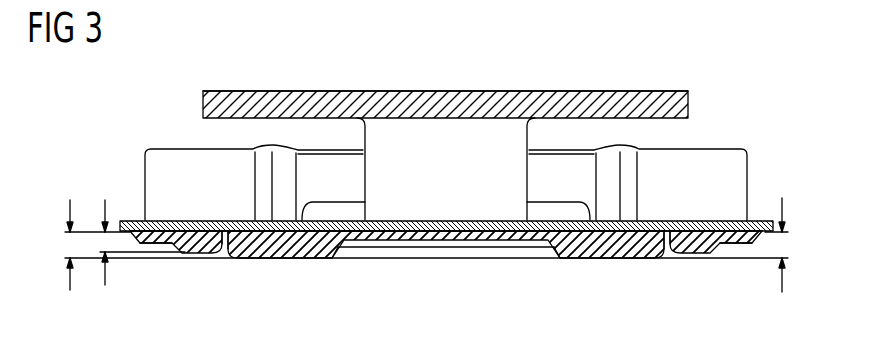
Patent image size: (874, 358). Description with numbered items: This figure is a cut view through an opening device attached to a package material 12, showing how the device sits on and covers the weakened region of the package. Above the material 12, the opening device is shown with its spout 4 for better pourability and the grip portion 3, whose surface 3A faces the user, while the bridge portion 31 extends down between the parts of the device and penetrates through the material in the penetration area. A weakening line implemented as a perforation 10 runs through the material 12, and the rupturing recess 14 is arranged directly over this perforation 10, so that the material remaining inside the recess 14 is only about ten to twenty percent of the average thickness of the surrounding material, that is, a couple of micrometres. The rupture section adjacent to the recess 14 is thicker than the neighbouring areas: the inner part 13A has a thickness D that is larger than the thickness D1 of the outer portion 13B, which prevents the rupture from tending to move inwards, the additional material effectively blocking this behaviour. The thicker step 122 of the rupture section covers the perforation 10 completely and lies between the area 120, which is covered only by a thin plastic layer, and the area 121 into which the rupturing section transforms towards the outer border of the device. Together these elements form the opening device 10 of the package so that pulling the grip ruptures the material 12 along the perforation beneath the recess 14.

The grip portion 3 is at (425, 91).
The surface of plate 3A is at (543, 93).
The spout 4 is at (163, 160).
The bridge portion 31 is at (478, 181).
The material 12 is at (394, 222).
The perforation 10 is at (671, 232).
The inner part of the rupture section 13A is at (297, 260).
The thin portion of carrier layer 13B is at (197, 254).
The rupturing recess 14 is at (225, 256).
The area covered by thin plastic layer 120 is at (142, 246).
The step of the rupture section 122 is at (457, 253).
The area of the rupture section 121 is at (503, 262).
The thickness of inner part D is at (68, 247).
The thickness D1 is at (106, 232).